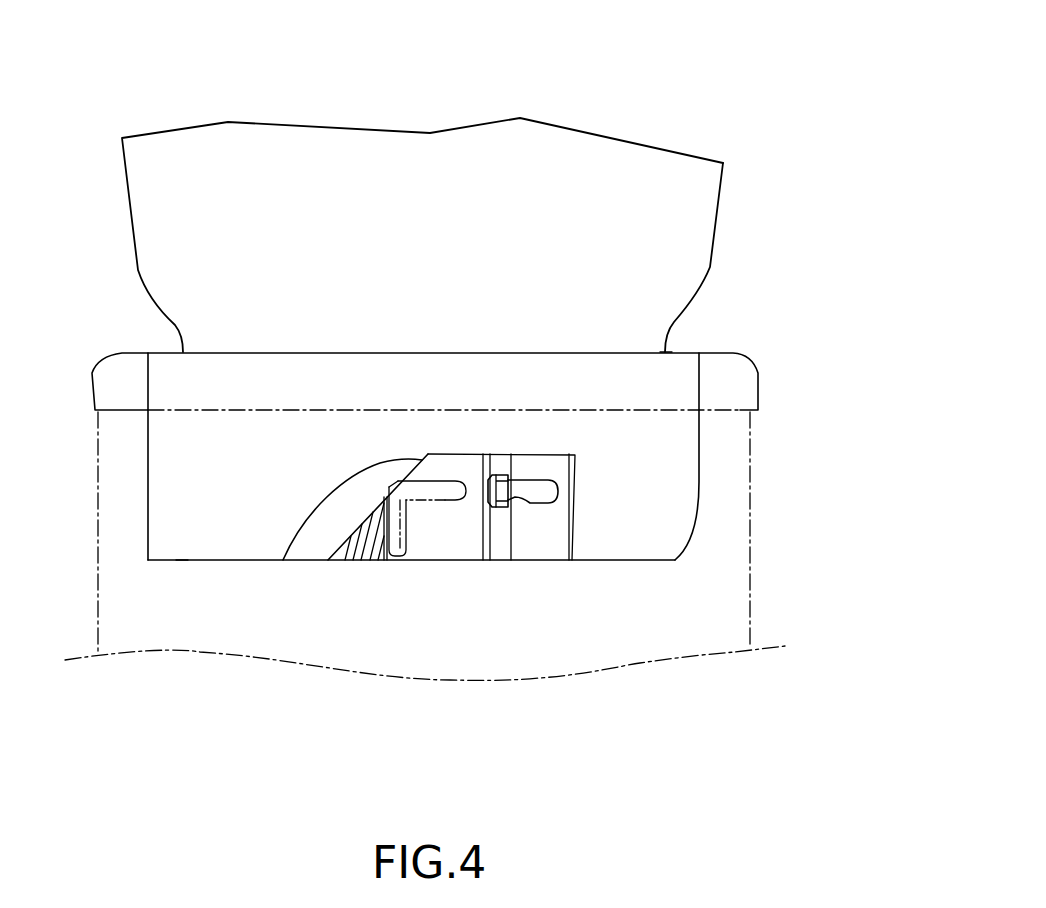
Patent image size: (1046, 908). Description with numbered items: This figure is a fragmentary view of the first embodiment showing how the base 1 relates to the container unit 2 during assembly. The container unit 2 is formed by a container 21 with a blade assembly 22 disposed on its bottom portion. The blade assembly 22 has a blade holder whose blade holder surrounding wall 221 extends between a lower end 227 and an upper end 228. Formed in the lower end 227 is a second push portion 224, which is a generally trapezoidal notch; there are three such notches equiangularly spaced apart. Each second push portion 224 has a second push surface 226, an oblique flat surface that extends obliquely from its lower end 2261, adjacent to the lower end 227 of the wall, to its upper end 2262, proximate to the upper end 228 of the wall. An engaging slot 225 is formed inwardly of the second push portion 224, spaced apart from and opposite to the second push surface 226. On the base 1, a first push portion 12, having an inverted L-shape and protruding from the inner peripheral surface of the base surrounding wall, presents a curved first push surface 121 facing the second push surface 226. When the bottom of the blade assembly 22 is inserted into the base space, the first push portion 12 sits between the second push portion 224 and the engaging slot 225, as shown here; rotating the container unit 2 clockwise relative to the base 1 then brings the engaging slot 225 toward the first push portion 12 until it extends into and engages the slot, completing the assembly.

The base 1 is at (762, 535).
The container unit 2 is at (703, 118).
The first push portion 12 is at (438, 498).
The first push surface 121 is at (400, 483).
The container 21 is at (722, 219).
The blade assembly 22 is at (702, 443).
The blade holder surrounding wall 221 is at (699, 492).
The second push portion 224 is at (378, 540).
The engaging slot 225 is at (543, 492).
The second push surface 226 is at (364, 526).
The lower end of the second push surface 2261 is at (343, 560).
The upper end of the second push surface 2262 is at (283, 560).
The lower end of the blade holder surrounding wall 227 is at (182, 560).
The upper end of the blade holder surrounding wall 228 is at (666, 352).